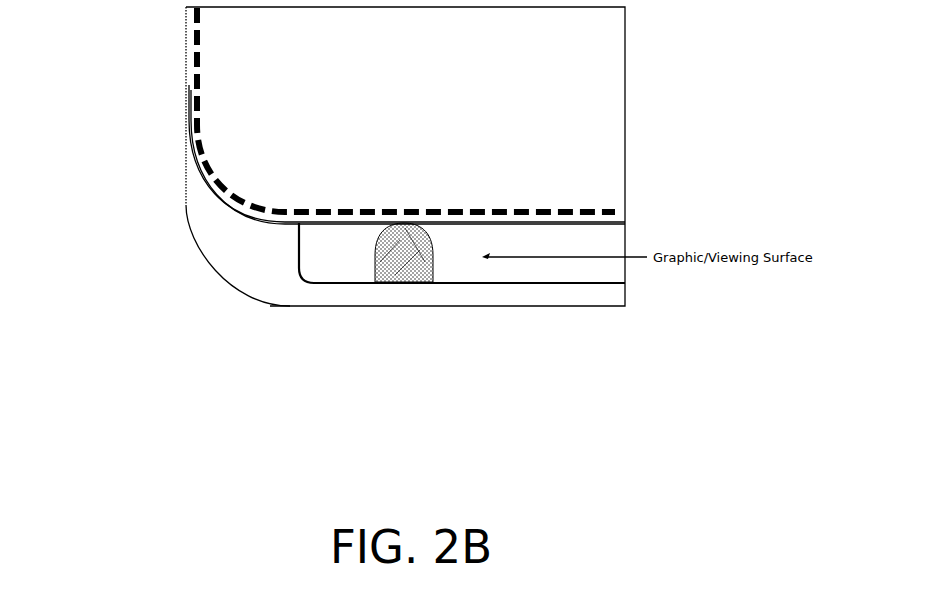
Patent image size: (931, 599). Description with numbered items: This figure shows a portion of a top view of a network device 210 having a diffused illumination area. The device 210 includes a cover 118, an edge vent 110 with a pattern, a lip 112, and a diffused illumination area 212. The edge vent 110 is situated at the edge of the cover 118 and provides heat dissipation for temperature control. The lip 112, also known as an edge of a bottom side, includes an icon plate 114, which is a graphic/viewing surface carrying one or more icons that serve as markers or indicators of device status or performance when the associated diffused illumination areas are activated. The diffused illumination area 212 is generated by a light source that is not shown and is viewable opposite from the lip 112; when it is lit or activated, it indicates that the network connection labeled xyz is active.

The network device 210 is at (123, 120).
The cover 118 is at (427, 60).
The edge vent 110 is at (563, 210).
The lip 112 is at (248, 253).
The icon plate 114 is at (350, 260).
The diffused illumination area 212 is at (408, 272).